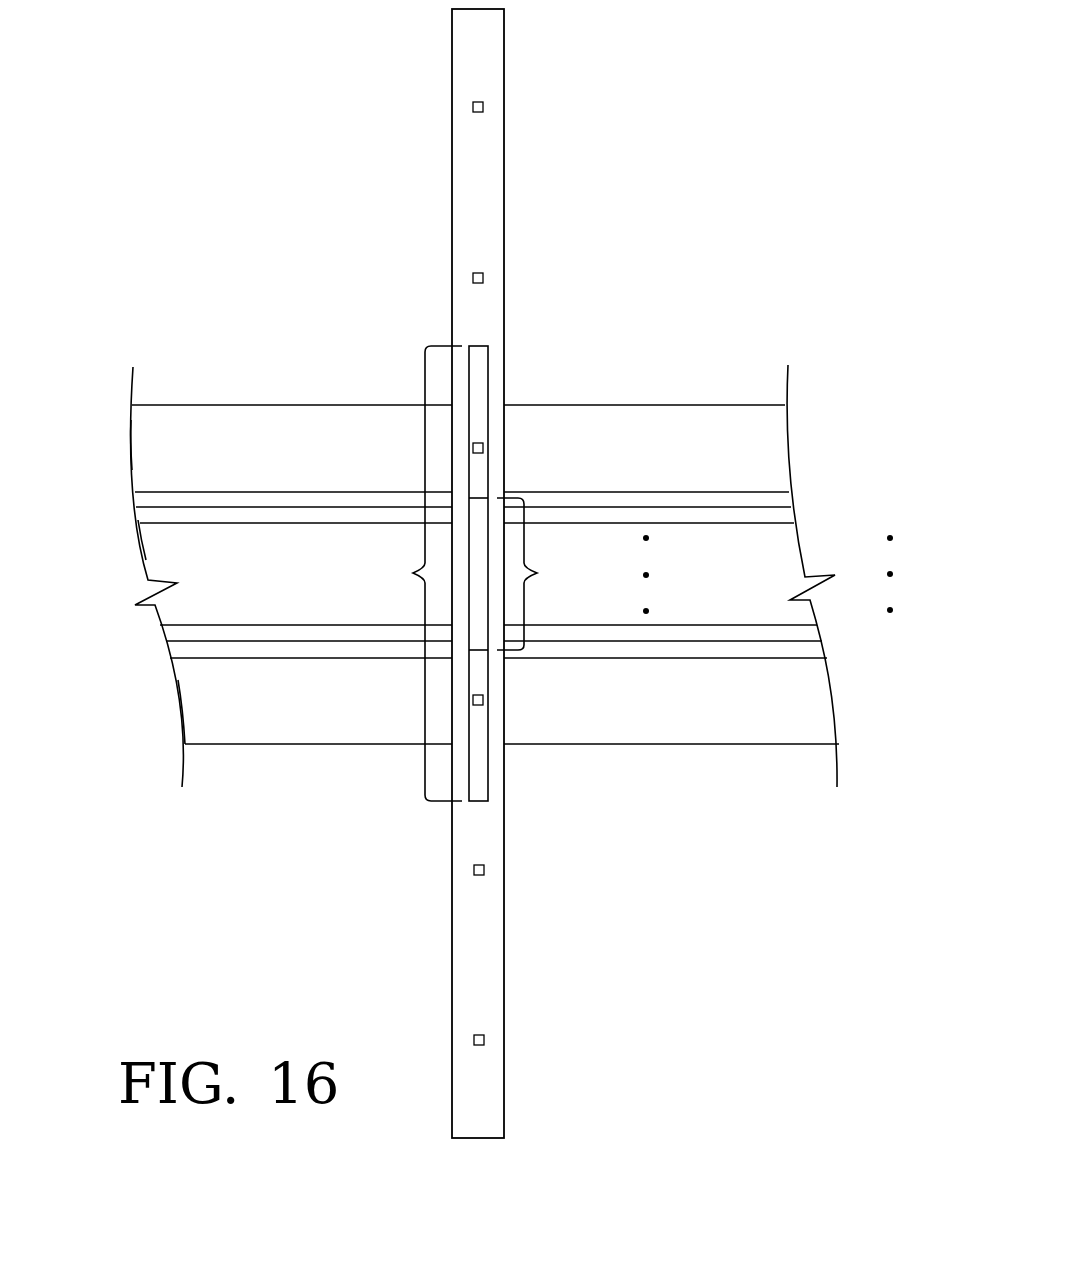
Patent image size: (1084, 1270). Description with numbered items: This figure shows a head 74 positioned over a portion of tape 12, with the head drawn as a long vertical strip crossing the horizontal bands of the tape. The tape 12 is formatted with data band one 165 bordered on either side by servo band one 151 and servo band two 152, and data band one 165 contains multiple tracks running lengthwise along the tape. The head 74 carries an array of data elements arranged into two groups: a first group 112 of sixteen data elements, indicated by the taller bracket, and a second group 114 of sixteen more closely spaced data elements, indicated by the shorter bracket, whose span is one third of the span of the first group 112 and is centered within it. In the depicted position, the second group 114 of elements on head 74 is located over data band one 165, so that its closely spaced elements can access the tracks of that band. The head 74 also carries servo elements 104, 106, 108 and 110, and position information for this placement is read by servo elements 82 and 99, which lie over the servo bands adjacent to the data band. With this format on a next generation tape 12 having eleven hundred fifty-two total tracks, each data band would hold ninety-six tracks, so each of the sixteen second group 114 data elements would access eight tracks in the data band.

The head 74 is at (492, 35).
The servo element 104 is at (483, 106).
The servo element 106 is at (483, 277).
The servo element 82 is at (483, 452).
The servo element 99 is at (483, 700).
The servo element 108 is at (484, 869).
The servo element 110 is at (484, 1039).
The tape 12 is at (317, 413).
The servo band 1 151 is at (140, 449).
The data band 1 165 is at (150, 533).
The servo band 2 152 is at (190, 712).
The first group of data elements 112 is at (415, 573).
The second group of data elements 114 is at (542, 574).